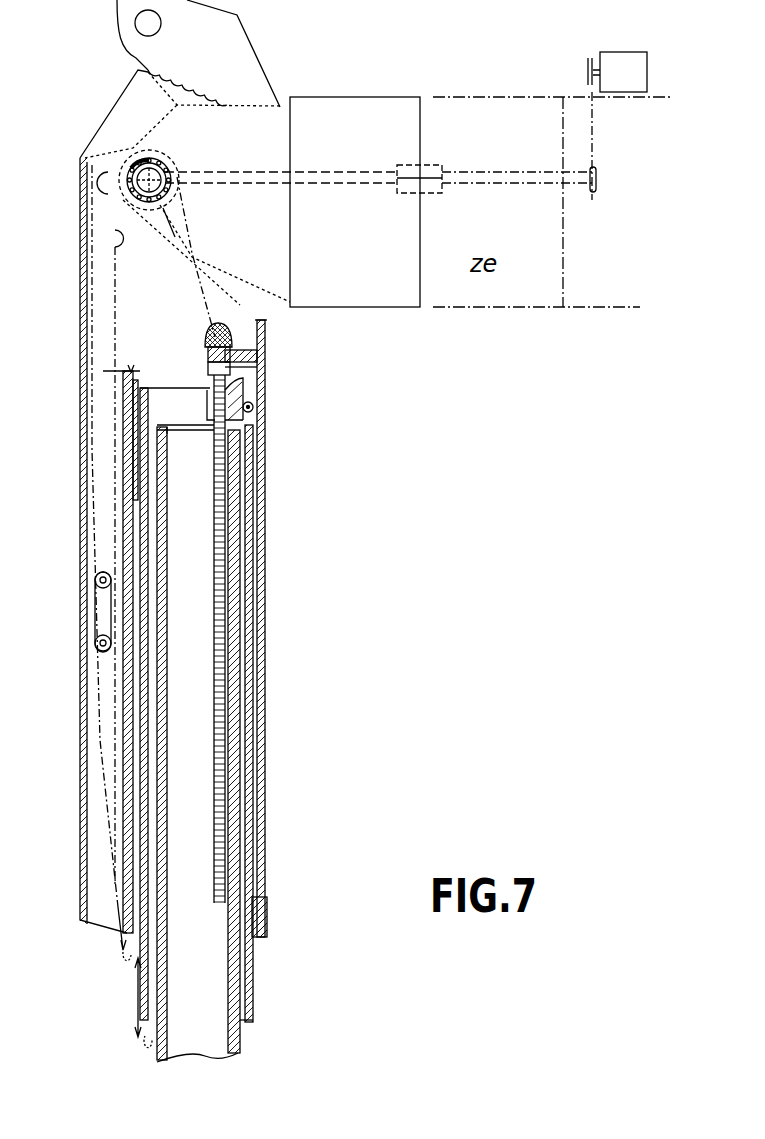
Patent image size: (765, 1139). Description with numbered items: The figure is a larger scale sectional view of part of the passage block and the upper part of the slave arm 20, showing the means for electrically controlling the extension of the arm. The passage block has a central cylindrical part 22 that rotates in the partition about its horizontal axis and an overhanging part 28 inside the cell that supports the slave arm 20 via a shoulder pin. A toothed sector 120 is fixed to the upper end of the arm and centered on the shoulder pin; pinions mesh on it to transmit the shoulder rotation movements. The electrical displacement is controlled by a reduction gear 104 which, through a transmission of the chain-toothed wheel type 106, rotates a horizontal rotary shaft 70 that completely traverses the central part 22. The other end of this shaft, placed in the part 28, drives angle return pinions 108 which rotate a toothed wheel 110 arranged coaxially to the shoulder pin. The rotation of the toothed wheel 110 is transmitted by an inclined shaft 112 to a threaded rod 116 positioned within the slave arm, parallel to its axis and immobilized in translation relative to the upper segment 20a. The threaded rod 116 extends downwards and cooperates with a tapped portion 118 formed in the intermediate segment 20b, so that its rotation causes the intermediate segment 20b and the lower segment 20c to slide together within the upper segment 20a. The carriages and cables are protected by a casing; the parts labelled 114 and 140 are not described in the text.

The slave arm 20 is at (310, 715).
The upper segment 20a is at (265, 530).
The intermediate segment 20b is at (245, 598).
The lower segment 20c is at (232, 660).
The cylindrical part 22 is at (443, 97).
The overhanging part 28 is at (386, 313).
The horizontal rotary shaft 70 is at (460, 188).
The reduction gear 104 is at (617, 58).
The chain-toothed wheel transmission 106 is at (608, 183).
The angle return pinions 108 is at (175, 205).
The toothed wheel 110 is at (150, 157).
The inclined shaft 112 is at (214, 330).
The band 114 is at (233, 304).
The threaded rod 116 is at (228, 450).
The tapped portion 118 is at (245, 381).
The toothed sector 120 is at (203, 88).
The housing plate 140 is at (80, 888).